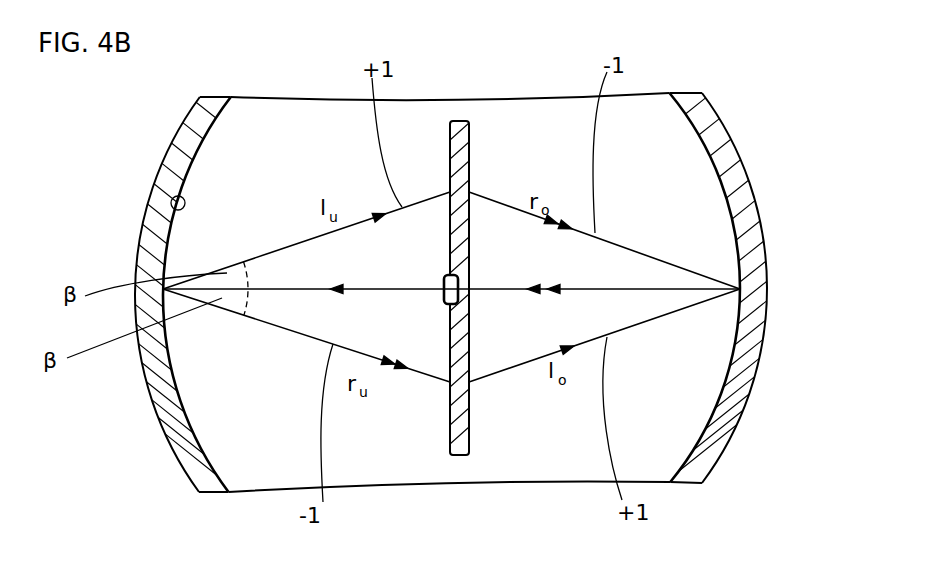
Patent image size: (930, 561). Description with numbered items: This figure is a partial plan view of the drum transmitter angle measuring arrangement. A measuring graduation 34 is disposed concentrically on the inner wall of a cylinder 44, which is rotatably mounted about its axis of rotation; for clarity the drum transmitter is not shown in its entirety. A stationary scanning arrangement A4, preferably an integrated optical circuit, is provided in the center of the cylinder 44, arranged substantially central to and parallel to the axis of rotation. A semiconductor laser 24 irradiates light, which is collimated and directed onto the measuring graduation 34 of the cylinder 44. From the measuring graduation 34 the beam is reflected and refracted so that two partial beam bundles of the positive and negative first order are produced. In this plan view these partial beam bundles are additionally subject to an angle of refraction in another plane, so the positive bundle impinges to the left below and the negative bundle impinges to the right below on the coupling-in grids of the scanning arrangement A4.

The cylinder 44 is at (200, 124).
The measuring graduation 34 is at (173, 198).
The scanning arrangement A4 is at (468, 121).
The semiconductor laser 24 is at (458, 292).